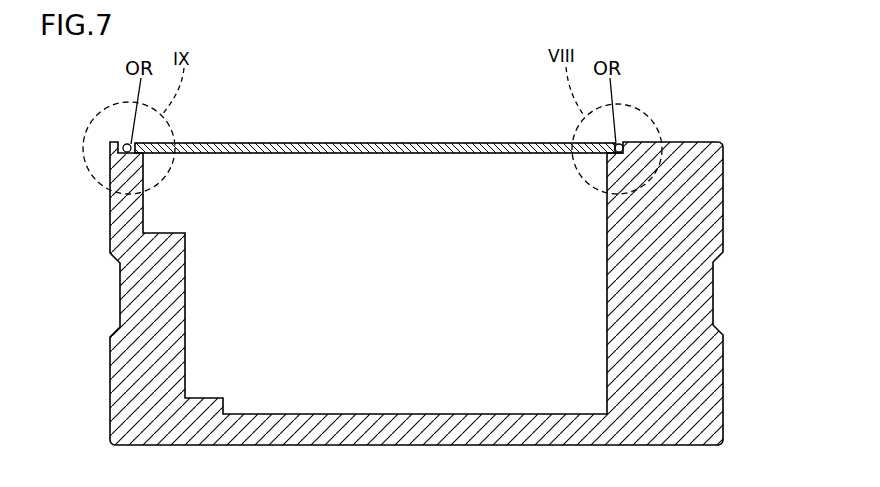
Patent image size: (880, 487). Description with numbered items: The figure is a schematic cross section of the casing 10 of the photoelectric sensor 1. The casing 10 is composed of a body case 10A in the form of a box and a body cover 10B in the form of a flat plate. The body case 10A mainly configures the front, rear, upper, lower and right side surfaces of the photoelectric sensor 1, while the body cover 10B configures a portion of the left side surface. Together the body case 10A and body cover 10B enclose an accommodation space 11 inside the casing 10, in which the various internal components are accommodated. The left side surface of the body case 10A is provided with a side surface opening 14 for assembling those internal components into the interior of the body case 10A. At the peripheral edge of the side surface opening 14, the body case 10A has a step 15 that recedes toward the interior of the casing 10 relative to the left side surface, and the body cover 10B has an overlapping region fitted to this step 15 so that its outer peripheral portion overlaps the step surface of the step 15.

The photoelectric sensor 1 is at (773, 39).
The casing 10 is at (709, 136).
The body case 10A is at (665, 290).
The body cover 10B is at (383, 142).
The accommodation space 11 is at (270, 293).
The side surface opening 14 is at (606, 162).
The step 15 is at (127, 144).